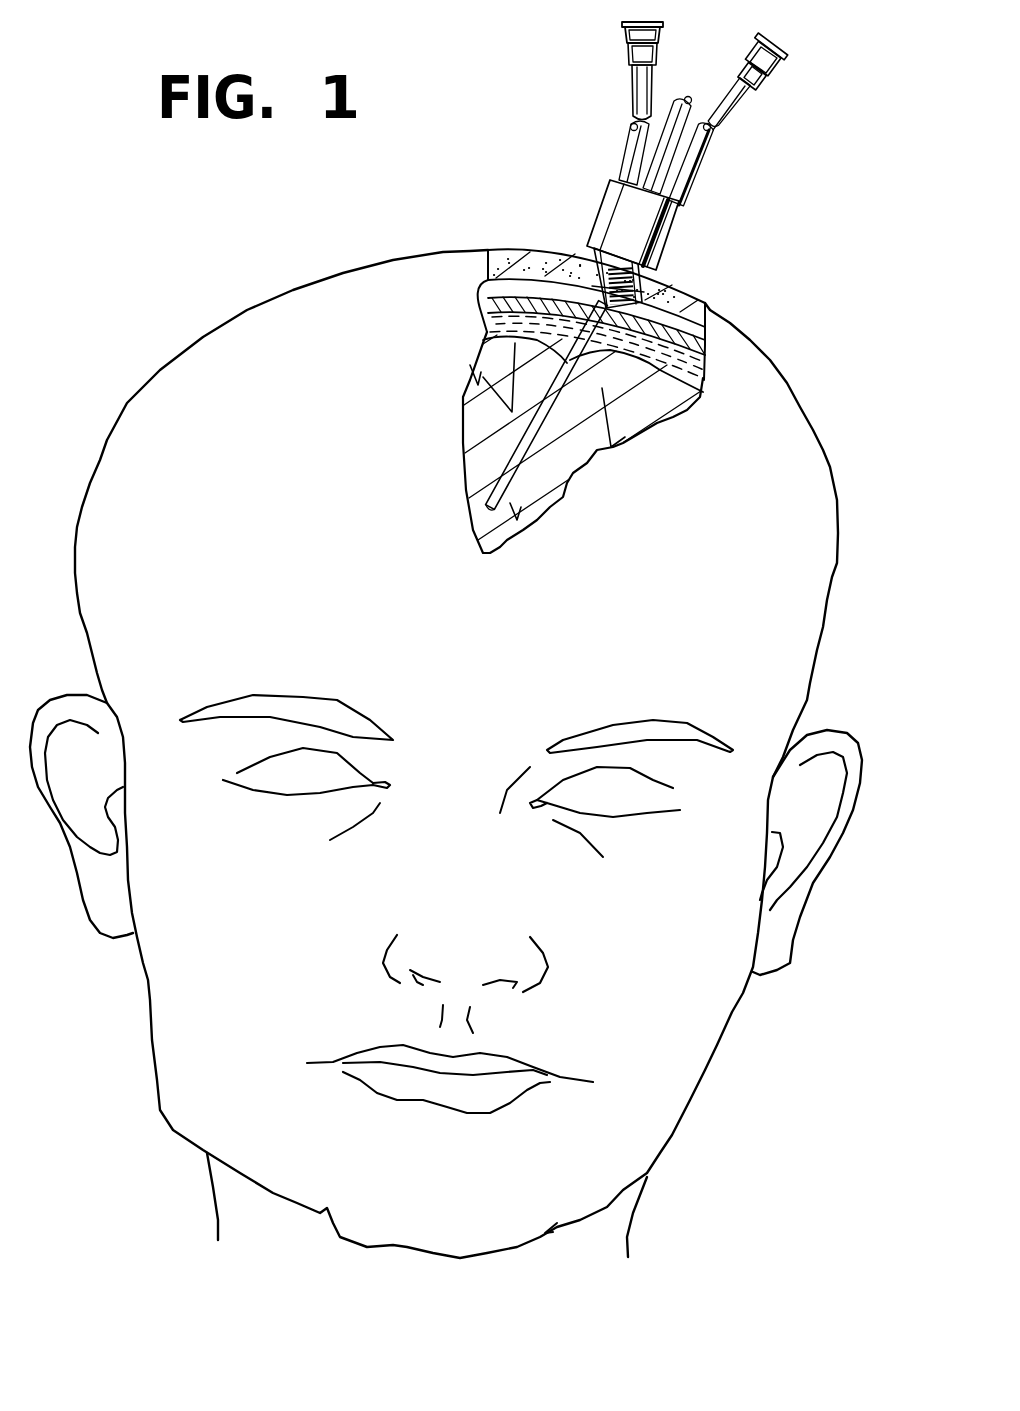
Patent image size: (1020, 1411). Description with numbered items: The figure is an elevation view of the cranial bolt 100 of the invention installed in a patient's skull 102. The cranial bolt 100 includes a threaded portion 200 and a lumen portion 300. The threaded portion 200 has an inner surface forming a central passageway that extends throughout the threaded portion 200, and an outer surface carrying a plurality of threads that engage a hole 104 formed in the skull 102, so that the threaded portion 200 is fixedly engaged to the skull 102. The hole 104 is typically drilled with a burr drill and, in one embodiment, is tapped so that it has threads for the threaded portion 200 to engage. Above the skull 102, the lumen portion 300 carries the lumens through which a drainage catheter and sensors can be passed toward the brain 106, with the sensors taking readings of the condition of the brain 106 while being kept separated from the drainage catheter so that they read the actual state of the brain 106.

The cranial bolt 100 is at (690, 188).
The skull 102 is at (707, 310).
The hole 104 is at (577, 257).
The brain 106 is at (557, 468).
The threaded portion 200 is at (650, 285).
The lumen portion 300 is at (603, 200).